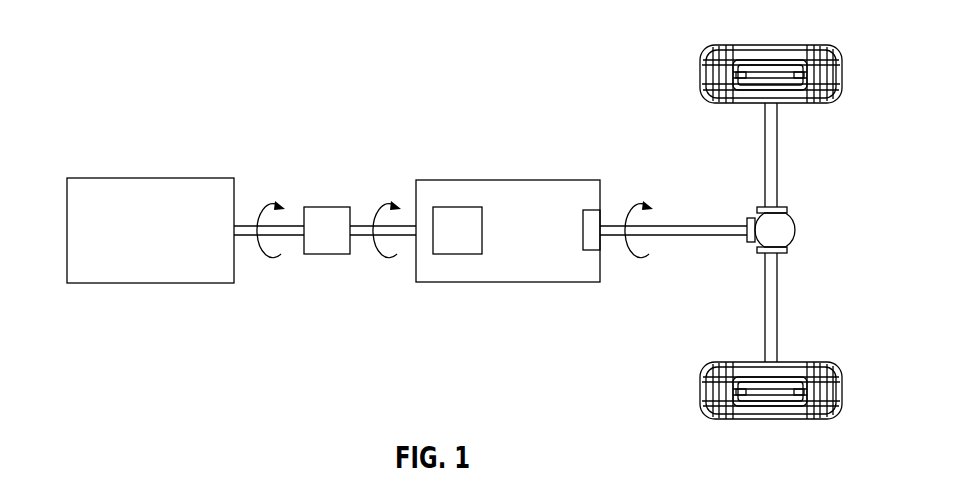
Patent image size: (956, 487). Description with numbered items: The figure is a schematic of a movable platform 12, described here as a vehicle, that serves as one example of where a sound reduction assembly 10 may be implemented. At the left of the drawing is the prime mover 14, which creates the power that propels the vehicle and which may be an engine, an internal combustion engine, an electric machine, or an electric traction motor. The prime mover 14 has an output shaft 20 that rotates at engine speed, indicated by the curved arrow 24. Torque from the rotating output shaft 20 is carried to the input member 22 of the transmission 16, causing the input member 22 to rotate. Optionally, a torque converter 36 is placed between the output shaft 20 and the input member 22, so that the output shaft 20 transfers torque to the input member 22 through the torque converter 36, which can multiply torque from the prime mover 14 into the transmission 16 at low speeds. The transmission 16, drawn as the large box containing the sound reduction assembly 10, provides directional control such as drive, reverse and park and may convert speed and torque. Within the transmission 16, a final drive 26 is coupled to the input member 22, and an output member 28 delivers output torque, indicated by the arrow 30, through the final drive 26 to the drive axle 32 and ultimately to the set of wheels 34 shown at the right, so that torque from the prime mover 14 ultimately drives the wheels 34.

The movable platform 12 is at (126, 74).
The prime mover 14 is at (120, 177).
The transmission 16 is at (467, 180).
The sound reduction assembly 10 is at (458, 253).
The output shaft 20 is at (293, 237).
The input member 22 is at (412, 243).
The arrow 24 is at (276, 208).
The final drive 26 is at (592, 253).
The output member 28 is at (697, 237).
The arrow 30 is at (637, 210).
The drive axle 32 is at (781, 163).
The wheels 34 is at (710, 50).
The torque converter 36 is at (325, 207).